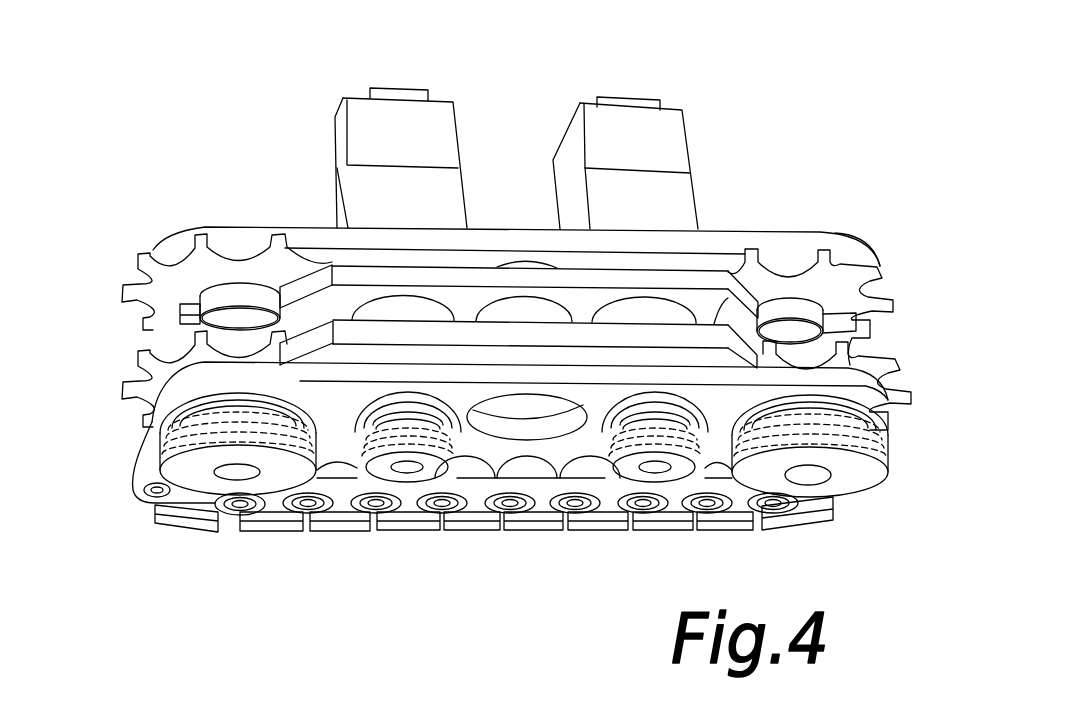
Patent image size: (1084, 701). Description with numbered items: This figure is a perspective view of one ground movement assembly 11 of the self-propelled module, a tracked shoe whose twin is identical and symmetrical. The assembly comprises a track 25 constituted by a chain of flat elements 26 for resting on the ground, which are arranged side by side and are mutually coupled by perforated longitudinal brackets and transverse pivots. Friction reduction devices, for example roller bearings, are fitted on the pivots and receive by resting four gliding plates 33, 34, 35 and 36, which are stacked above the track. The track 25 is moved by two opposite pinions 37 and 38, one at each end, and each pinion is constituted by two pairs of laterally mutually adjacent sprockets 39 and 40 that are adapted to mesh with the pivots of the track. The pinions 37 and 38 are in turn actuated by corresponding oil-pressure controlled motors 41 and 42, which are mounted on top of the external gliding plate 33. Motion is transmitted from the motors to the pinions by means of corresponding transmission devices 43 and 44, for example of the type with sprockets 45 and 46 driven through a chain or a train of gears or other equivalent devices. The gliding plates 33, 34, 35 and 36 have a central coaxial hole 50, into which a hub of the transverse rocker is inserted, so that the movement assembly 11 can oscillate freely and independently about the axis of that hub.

The ground movement assembly 11 is at (867, 184).
The track 25 is at (354, 510).
The flat elements 26 is at (710, 522).
The external gliding plate 33 is at (512, 232).
The gliding plate 34 is at (683, 280).
The gliding plate 35 is at (398, 330).
The gliding plate 36 is at (205, 373).
The pinion 37 is at (149, 247).
The pinion 38 is at (880, 272).
The sprocket 39 is at (233, 273).
The sprocket 40 is at (815, 288).
The oil-pressure controlled motor 41 is at (410, 118).
The oil-pressure controlled motor 42 is at (628, 123).
The transmission device 43 is at (197, 482).
The transmission device 44 is at (808, 496).
The sprocket 45 is at (272, 478).
The sprocket 46 is at (433, 470).
The central coaxial hole 50 is at (541, 427).